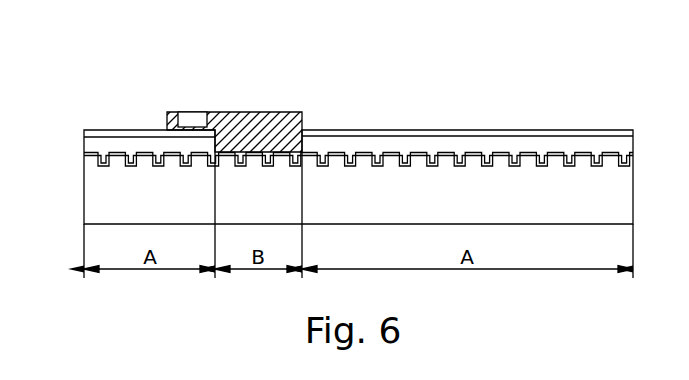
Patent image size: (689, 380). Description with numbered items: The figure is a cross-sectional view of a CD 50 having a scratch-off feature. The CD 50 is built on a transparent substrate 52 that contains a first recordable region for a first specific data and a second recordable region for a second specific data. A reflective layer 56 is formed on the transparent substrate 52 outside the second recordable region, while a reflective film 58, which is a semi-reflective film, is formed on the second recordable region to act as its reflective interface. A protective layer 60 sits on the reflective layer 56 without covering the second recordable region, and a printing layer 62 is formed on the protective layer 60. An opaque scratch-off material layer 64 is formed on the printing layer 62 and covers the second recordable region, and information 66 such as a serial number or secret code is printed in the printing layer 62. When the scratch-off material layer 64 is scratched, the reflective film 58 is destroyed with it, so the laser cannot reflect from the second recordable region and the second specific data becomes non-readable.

The CD 50 is at (606, 83).
The transparent substrate 52 is at (367, 211).
The reflective layer 56 is at (97, 155).
The reflective film 58 is at (232, 101).
The protective layer 60 is at (96, 145).
The printing layer 62 is at (503, 133).
The scratch-off material layer 64 is at (257, 127).
The information 66 is at (188, 124).